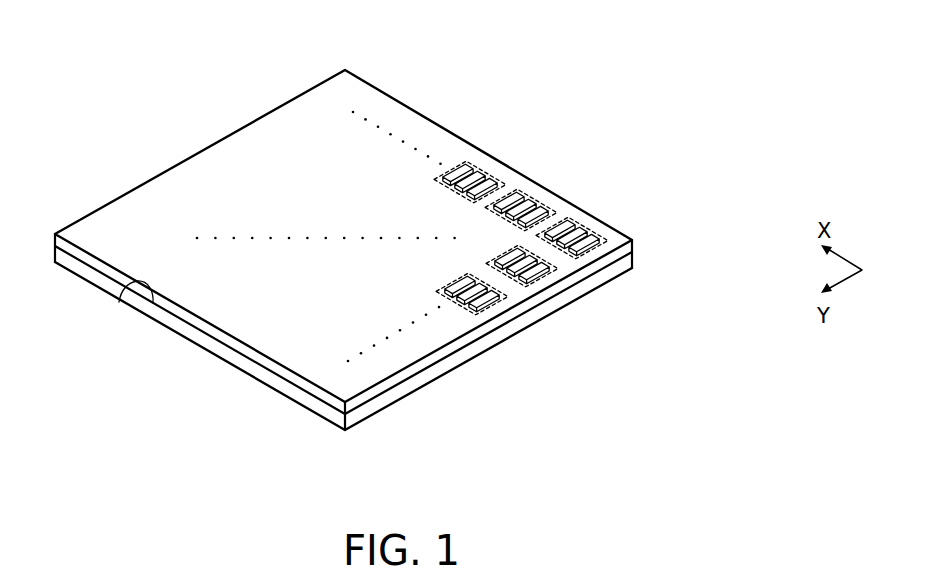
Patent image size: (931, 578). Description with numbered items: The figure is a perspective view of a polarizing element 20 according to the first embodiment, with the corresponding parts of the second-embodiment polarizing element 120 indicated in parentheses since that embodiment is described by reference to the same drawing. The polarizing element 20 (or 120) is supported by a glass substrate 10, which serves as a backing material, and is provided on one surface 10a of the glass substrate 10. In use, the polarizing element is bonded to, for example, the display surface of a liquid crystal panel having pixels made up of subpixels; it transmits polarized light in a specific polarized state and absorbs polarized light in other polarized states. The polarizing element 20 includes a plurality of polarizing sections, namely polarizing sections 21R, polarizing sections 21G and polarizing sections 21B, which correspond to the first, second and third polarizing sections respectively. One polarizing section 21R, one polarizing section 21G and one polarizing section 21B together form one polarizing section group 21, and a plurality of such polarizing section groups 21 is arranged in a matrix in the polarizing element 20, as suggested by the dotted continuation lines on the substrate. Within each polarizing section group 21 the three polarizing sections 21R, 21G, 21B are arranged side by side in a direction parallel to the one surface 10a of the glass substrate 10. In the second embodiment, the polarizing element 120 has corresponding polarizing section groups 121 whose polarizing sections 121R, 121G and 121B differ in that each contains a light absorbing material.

The glass substrate 10 is at (634, 263).
The one surface of the glass substrate 10a is at (119, 302).
The polarizing element 20 is at (634, 247).
The polarizing element 120 is at (411, 242).
The polarizing section group 21 is at (553, 170).
The polarizing section group 121 is at (553, 170).
The polarizing section 21R is at (460, 170).
The polarizing section 121R is at (577, 168).
The polarizing section 21G is at (484, 172).
The polarizing section 121G is at (608, 186).
The polarizing section 21B is at (631, 204).
The polarizing section 121B is at (631, 204).